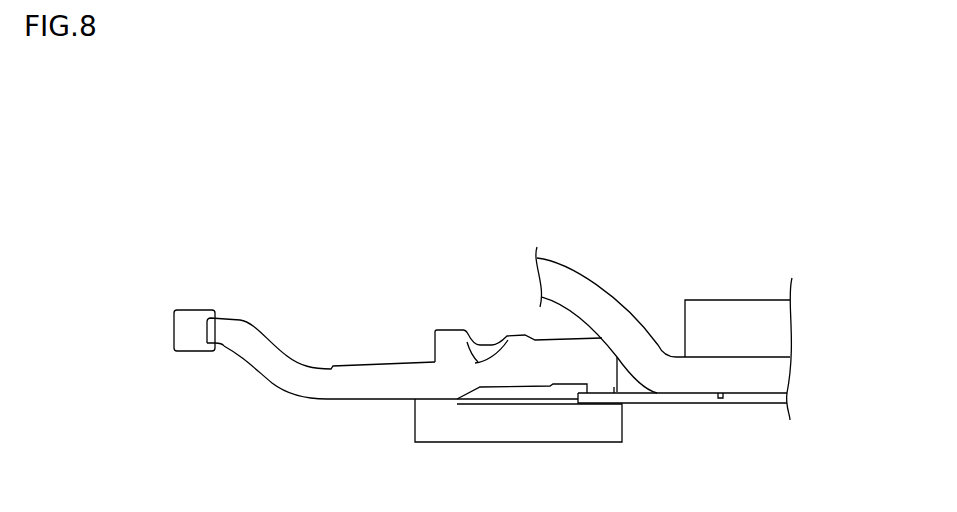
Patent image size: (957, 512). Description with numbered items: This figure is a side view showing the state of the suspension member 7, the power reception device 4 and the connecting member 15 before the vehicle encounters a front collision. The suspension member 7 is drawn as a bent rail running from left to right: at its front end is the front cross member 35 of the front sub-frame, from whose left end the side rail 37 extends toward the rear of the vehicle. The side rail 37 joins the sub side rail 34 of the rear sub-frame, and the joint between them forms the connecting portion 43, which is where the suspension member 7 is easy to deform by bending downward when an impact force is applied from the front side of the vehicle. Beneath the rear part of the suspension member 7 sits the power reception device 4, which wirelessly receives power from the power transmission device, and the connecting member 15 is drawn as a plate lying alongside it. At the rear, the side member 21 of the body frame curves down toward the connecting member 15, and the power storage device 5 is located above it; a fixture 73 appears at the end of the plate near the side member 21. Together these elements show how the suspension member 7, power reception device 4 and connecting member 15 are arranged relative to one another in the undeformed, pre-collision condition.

The suspension member 7 is at (363, 297).
The front cross member 35 is at (195, 317).
The side rail 37 is at (274, 341).
The sub side rail 34 is at (384, 378).
The connecting portion 43 is at (331, 391).
The side member 21 is at (580, 273).
The power storage device 5 is at (737, 309).
The power reception device 4 is at (511, 434).
The connecting member 15 is at (661, 406).
The fixture 73 is at (718, 401).